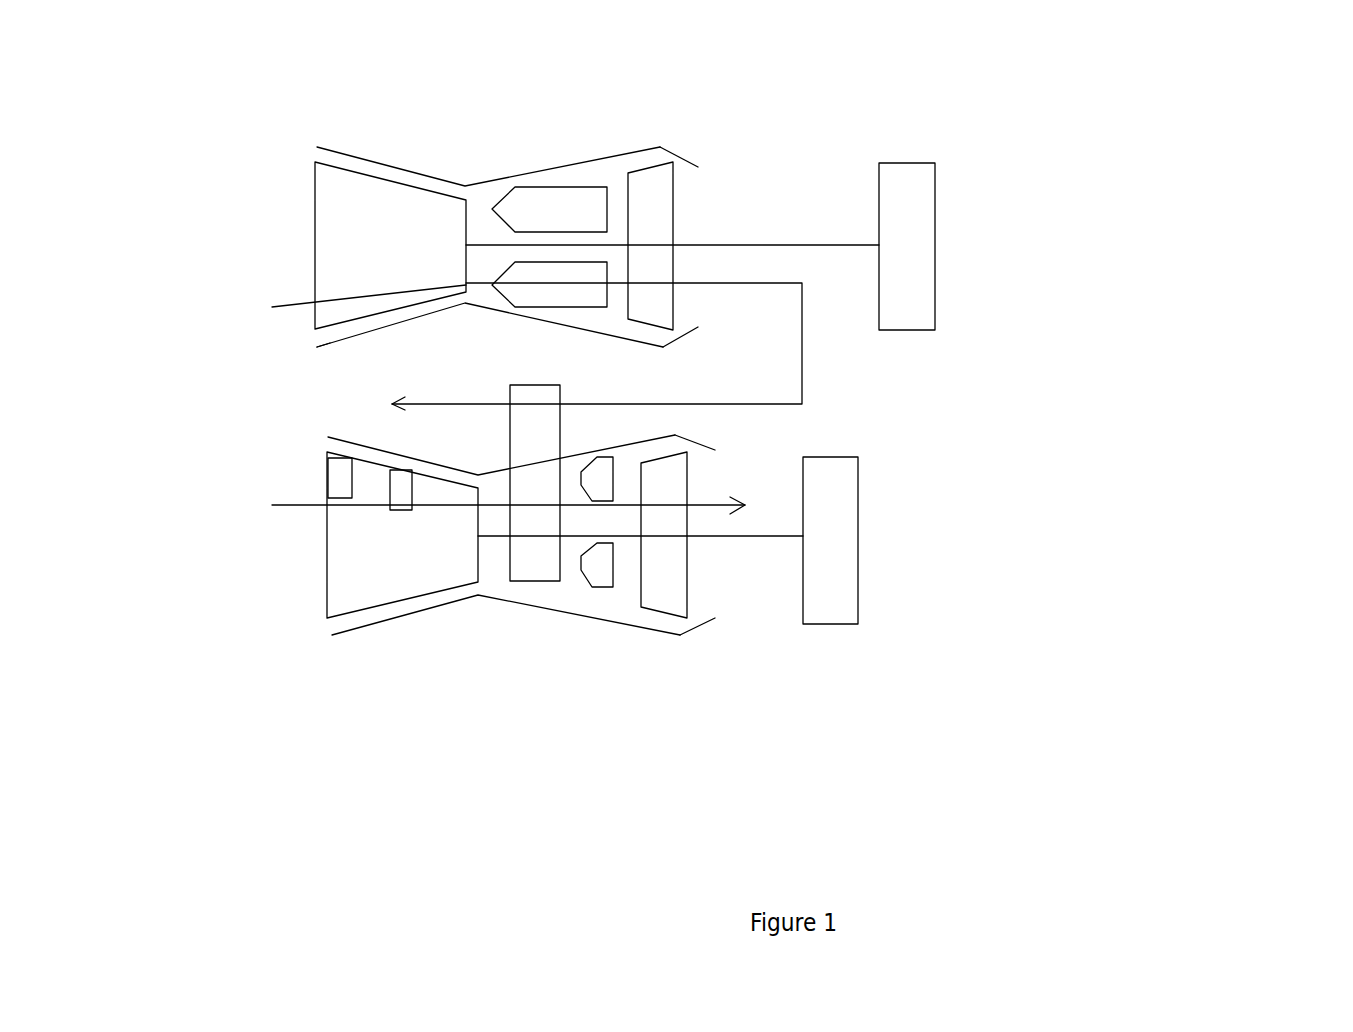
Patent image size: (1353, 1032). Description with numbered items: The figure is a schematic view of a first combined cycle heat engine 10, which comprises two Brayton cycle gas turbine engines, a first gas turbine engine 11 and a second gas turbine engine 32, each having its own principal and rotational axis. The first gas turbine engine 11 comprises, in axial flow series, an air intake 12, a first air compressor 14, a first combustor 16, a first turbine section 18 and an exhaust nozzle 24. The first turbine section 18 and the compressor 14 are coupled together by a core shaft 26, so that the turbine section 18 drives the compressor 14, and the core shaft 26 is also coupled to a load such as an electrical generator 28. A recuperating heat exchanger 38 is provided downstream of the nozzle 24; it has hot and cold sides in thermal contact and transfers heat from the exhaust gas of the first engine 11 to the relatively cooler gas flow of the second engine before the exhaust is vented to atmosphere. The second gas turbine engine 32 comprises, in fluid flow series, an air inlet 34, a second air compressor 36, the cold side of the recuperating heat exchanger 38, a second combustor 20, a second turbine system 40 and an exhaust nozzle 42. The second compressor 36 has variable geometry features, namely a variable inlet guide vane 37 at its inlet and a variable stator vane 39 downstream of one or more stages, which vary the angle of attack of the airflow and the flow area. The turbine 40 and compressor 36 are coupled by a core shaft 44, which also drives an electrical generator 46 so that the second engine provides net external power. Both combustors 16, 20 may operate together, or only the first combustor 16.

The combined cycle heat engine 10 is at (1140, 368).
The first gas turbine engine 11 is at (803, 105).
The air intake 12 is at (305, 332).
The first air compressor 14 is at (327, 212).
The first combustor 16 is at (510, 188).
The first turbine section 18 is at (650, 167).
The second combustor 20 is at (595, 587).
The exhaust nozzle 24 is at (707, 200).
The core shaft 26 is at (507, 246).
The electrical generator 28 is at (940, 190).
The second gas turbine engine 32 is at (550, 678).
The air inlet 34 is at (315, 452).
The second air compressor 36 is at (327, 582).
The variable inlet guide vane 37 is at (340, 458).
The recuperating heat exchanger 38 is at (547, 581).
The variable stator vane 39 is at (402, 470).
The second turbine system 40 is at (688, 565).
The exhaust nozzle 42 is at (722, 627).
The core shaft 44 is at (768, 536).
The electrical generator 46 is at (858, 582).